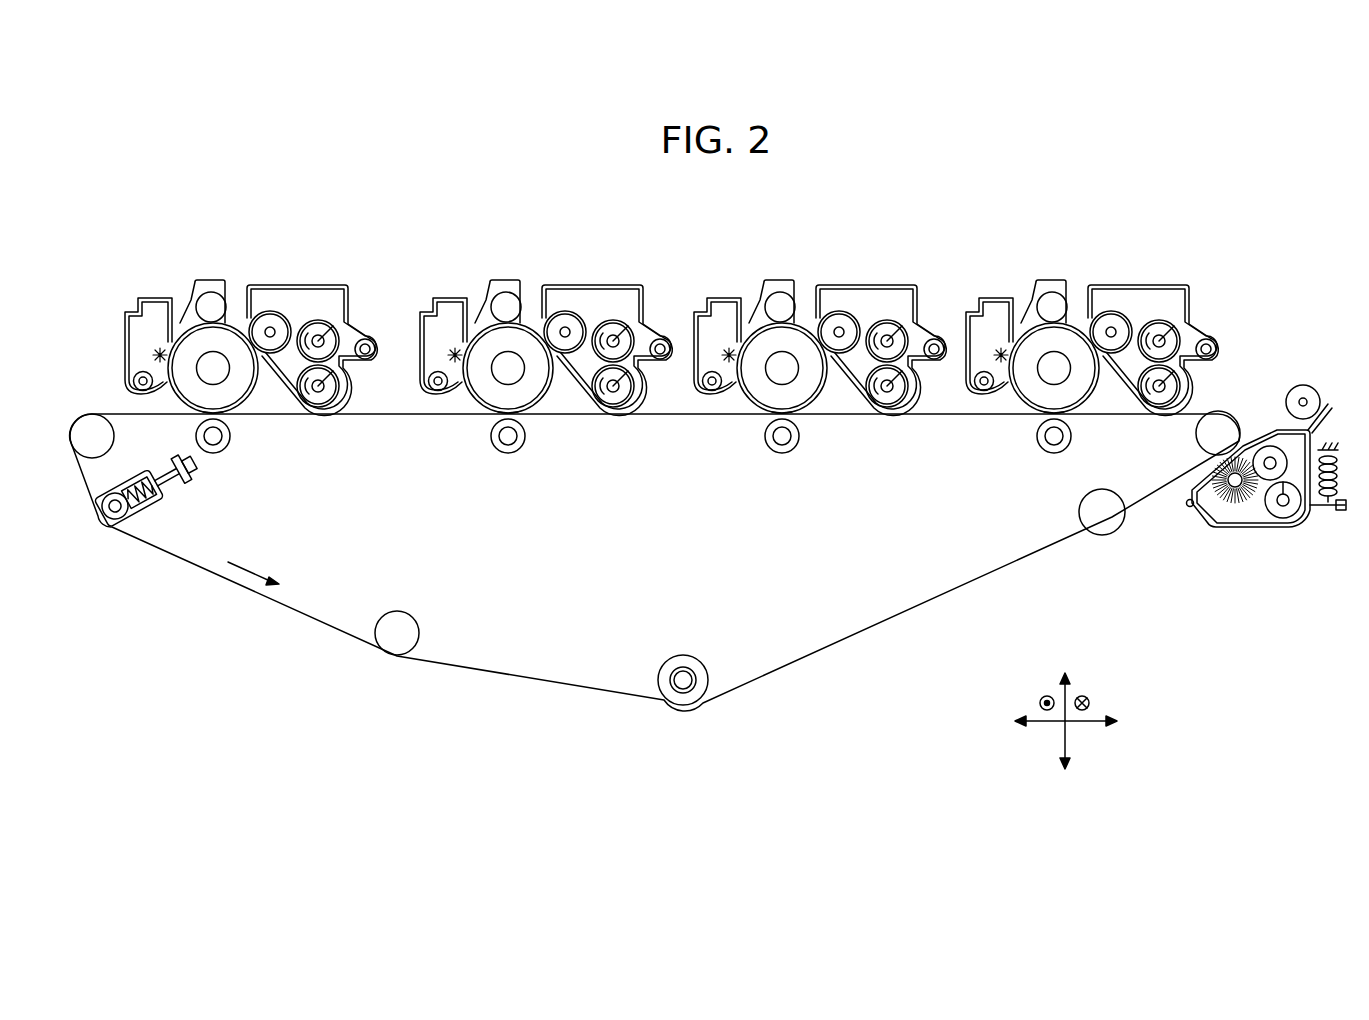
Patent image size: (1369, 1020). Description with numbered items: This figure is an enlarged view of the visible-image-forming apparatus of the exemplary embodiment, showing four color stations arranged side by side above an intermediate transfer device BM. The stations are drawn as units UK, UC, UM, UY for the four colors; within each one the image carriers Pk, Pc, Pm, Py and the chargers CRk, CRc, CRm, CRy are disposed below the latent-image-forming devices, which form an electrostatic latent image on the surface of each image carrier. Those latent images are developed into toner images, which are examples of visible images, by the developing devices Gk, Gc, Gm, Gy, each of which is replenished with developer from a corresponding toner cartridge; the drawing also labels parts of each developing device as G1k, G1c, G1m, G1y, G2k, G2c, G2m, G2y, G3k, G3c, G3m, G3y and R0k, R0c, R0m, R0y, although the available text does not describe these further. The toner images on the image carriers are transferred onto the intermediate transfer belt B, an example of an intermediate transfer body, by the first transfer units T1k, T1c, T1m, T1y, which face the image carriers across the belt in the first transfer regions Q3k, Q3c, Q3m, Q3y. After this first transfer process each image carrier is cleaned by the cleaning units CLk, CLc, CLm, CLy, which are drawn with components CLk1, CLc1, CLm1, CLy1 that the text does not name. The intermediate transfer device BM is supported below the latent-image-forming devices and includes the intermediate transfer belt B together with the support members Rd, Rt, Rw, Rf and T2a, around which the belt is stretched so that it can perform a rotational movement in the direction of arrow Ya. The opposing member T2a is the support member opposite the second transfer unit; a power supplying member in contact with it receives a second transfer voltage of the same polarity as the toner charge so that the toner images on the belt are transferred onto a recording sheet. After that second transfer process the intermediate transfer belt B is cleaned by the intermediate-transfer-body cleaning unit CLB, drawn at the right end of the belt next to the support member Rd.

The image forming unit (black) UK is at (228, 368).
The image forming unit (cyan) UC is at (553, 368).
The image forming unit (magenta) UM is at (826, 368).
The image forming unit (yellow) UY is at (1119, 368).
The cleaning unit CLk is at (114, 332).
The cleaning unit CLc is at (447, 354).
The cleaning unit CLm is at (719, 354).
The cleaning unit CLy is at (986, 354).
The cleaning roller CLk1 is at (104, 394).
The cleaning roller CLc1 is at (457, 417).
The cleaning roller CLm1 is at (729, 417).
The cleaning roller CLy1 is at (995, 417).
The charger CRk is at (215, 280).
The charger CRc is at (511, 280).
The charger CRm is at (787, 280).
The charger CRy is at (1054, 280).
The image carrier Pk is at (226, 370).
The image carrier Pc is at (524, 370).
The image carrier Pm is at (799, 370).
The image carrier Py is at (1067, 370).
The developing device Gk is at (323, 352).
The developing device Gc is at (620, 352).
The developing device Gm is at (897, 352).
The developing device Gy is at (1189, 328).
The developer container G1k is at (312, 328).
The developer container G1c is at (607, 328).
The developer container G1m is at (881, 328).
The developer container G1y is at (1153, 328).
The supply gear G2k is at (376, 323).
The supply gear G2c is at (674, 323).
The supply gear G2m is at (948, 323).
The supply gear G2y is at (1216, 323).
The agitating member G3k is at (343, 386).
The agitating member G3c is at (641, 386).
The agitating member G3m is at (917, 386).
The agitating member G3y is at (1214, 376).
The developing roller R0k is at (286, 321).
The developing roller R0c is at (582, 321).
The developing roller R0m is at (859, 321).
The developing roller R0y is at (1126, 321).
The first transfer region Q3k is at (251, 438).
The first transfer region Q3c is at (548, 438).
The first transfer region Q3m is at (825, 438).
The first transfer region Q3y is at (1091, 438).
The first transfer unit T1k is at (217, 466).
The first transfer unit T1c is at (515, 466).
The first transfer unit T1m is at (788, 466).
The first transfer unit T1y is at (1056, 466).
The intermediate transfer device BM is at (266, 631).
The intermediate transfer belt B is at (988, 582).
The direction of rotational movement Ya is at (253, 564).
The support member Rf is at (100, 435).
The support member Rt is at (105, 521).
The support member Rw is at (403, 625).
The opposing member T2a is at (667, 670).
The support member Rd is at (1213, 450).
The intermediate-transfer-body cleaning unit CLB is at (1237, 560).